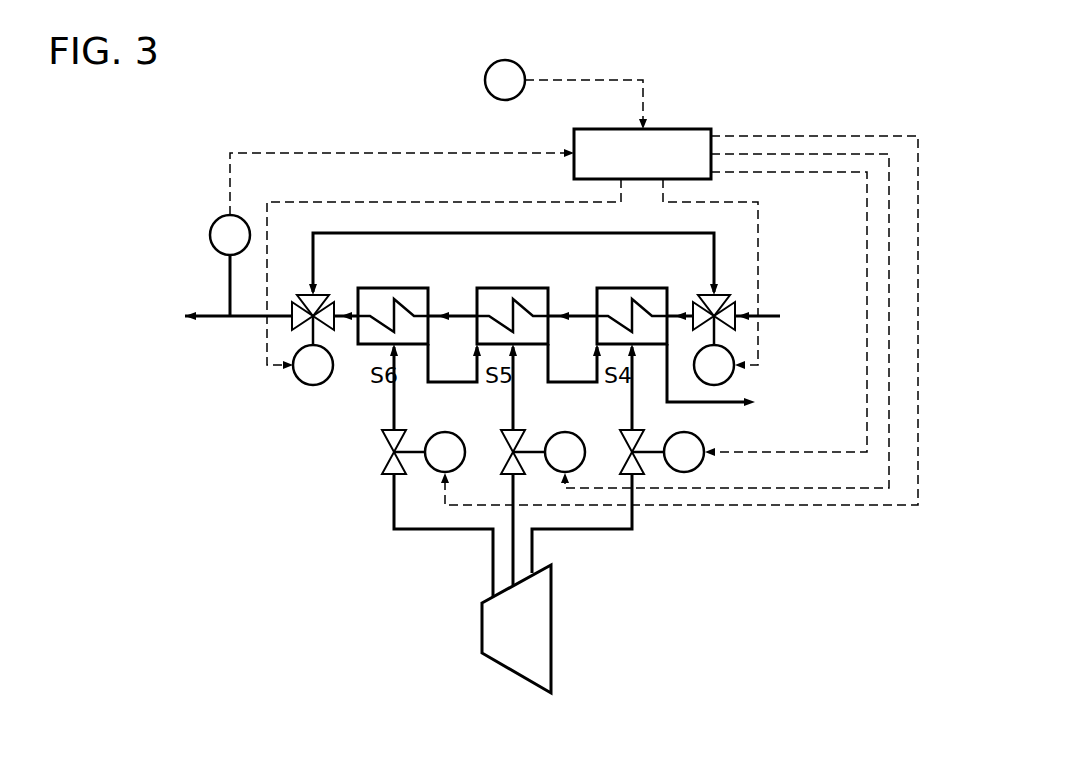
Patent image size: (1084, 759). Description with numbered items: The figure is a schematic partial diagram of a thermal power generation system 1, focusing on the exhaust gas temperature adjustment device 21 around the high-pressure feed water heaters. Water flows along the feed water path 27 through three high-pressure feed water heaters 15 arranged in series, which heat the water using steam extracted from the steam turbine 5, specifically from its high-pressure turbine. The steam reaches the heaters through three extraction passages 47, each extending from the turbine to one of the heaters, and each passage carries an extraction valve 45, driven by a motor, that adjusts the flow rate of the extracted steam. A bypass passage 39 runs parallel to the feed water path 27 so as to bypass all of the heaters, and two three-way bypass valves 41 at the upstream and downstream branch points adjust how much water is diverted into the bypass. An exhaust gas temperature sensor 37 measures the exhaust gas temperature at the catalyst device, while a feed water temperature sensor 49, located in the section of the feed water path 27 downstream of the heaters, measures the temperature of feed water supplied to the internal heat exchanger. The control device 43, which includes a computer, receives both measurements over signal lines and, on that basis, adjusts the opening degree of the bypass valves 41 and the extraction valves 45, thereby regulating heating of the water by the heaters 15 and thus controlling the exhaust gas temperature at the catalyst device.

The thermal power generation system 1 is at (860, 92).
The steam turbine 5 is at (552, 628).
The high-pressure feed water heater 15 is at (393, 287).
The exhaust gas temperature adjustment device 21 is at (798, 92).
The feed water path 27 is at (766, 314).
The exhaust gas temperature sensor 37 is at (485, 80).
The bypass passage 39 is at (462, 233).
The bypass valve 41 is at (303, 294).
The control device 43 is at (681, 129).
The extraction valve 45 is at (621, 434).
The extraction passage 47 is at (393, 493).
The feed water temperature sensor 49 is at (214, 230).